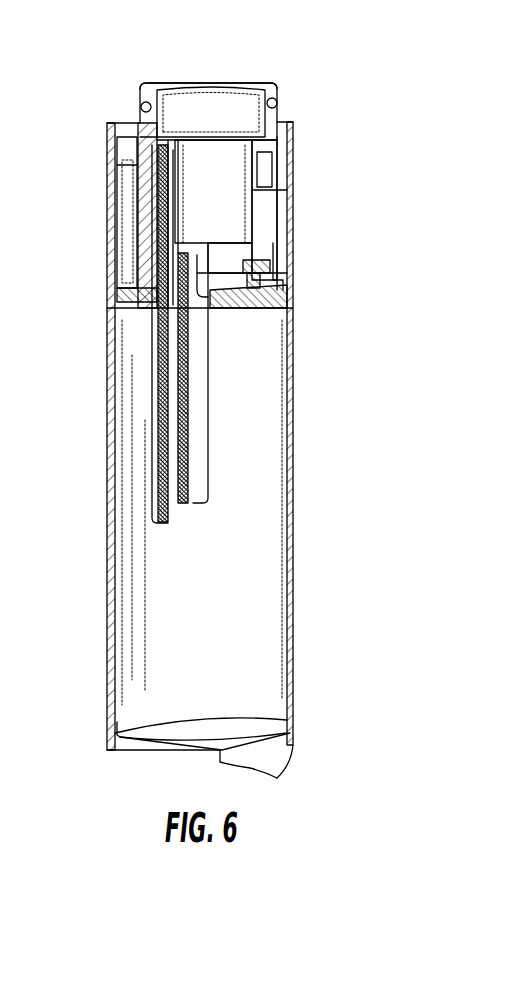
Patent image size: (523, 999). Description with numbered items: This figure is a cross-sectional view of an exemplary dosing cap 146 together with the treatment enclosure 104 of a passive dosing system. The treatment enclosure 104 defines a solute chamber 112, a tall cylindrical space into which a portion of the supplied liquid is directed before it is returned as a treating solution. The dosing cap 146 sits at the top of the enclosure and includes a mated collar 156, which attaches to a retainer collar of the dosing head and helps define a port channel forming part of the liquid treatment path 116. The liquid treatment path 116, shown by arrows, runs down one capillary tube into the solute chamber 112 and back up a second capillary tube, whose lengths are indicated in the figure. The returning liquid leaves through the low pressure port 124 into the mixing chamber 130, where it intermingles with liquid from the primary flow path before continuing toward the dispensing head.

The treatment enclosure 104 is at (115, 230).
The solute chamber 112 is at (241, 653).
The liquid treatment path 116 is at (163, 636).
The low pressure port 124 is at (187, 243).
The mixing chamber 130 is at (223, 263).
The dosing cap 146 is at (138, 123).
The mated collar 156 is at (208, 86).